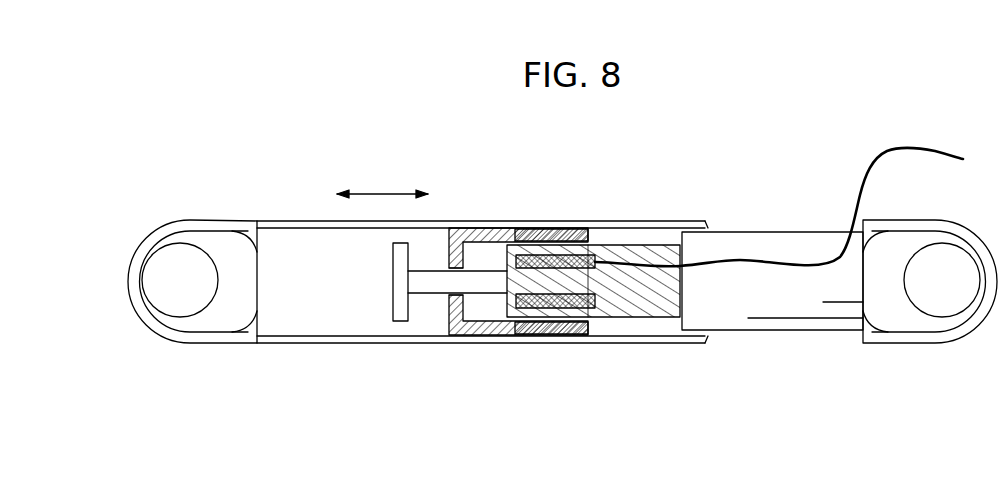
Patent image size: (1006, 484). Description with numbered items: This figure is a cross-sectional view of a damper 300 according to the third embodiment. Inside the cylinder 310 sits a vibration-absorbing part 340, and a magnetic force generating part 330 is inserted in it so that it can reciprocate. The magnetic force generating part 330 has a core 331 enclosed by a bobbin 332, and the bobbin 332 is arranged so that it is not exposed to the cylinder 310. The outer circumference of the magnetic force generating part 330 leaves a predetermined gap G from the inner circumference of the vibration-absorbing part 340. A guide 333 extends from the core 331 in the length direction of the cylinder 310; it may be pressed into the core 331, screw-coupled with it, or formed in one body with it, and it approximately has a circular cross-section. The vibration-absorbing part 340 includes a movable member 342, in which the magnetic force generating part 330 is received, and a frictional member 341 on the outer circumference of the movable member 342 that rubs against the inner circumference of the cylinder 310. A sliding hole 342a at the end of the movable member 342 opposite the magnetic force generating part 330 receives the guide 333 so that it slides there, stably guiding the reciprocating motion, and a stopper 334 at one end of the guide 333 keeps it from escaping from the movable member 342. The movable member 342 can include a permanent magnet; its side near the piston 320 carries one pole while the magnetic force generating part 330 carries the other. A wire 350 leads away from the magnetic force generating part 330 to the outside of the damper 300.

The damper 300 is at (808, 118).
The cylinder 310 is at (286, 221).
The piston 320 is at (805, 244).
The magnetic force generating part 330 is at (590, 417).
The core 331 is at (564, 289).
The bobbin 332 is at (600, 301).
The guide 333 is at (487, 277).
The stopper 334 is at (393, 278).
The vibration-absorbing part 340 is at (462, 417).
The frictional member 341 is at (527, 330).
The movable member 342 is at (465, 337).
The sliding hole 342a is at (458, 286).
The wire 350 is at (907, 145).
The gap G is at (582, 287).